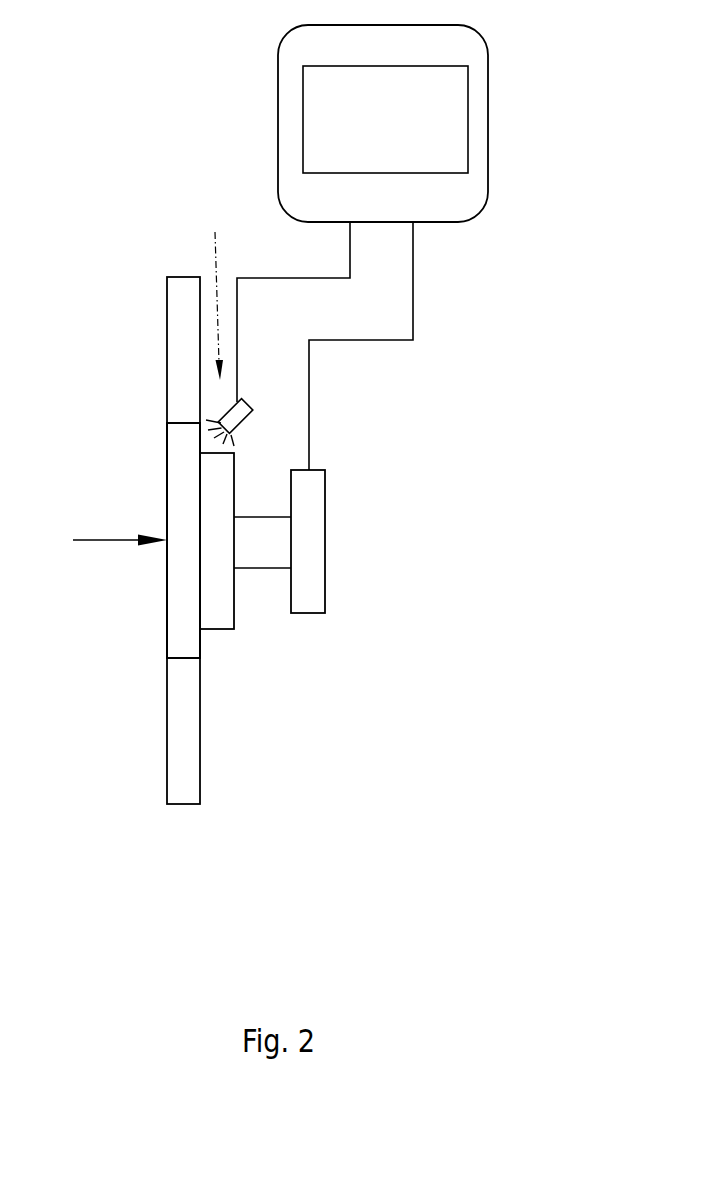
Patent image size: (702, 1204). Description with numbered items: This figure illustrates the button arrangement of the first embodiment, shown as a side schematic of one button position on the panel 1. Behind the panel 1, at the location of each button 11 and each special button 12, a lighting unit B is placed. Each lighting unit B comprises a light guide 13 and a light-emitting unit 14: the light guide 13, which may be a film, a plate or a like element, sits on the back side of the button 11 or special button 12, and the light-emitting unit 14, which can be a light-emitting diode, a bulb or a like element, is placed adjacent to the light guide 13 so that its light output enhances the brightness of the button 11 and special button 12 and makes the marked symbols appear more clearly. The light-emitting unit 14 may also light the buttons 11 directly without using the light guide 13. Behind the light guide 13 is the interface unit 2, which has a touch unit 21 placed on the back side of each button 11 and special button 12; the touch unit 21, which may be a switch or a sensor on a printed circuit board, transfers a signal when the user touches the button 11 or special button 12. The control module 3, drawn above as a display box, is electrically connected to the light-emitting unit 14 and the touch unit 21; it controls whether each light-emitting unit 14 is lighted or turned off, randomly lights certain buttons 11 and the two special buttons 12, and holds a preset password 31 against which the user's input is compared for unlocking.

The panel 1 is at (140, 540).
The button 11 is at (167, 490).
The special button 12 is at (183, 540).
The light guide 13 is at (217, 633).
The light-emitting unit 14 is at (250, 406).
The interface unit 2 is at (338, 541).
The touch unit 21 is at (325, 518).
The control module 3 is at (428, 128).
The preset password 31 is at (455, 163).
The lighting unit B is at (220, 290).